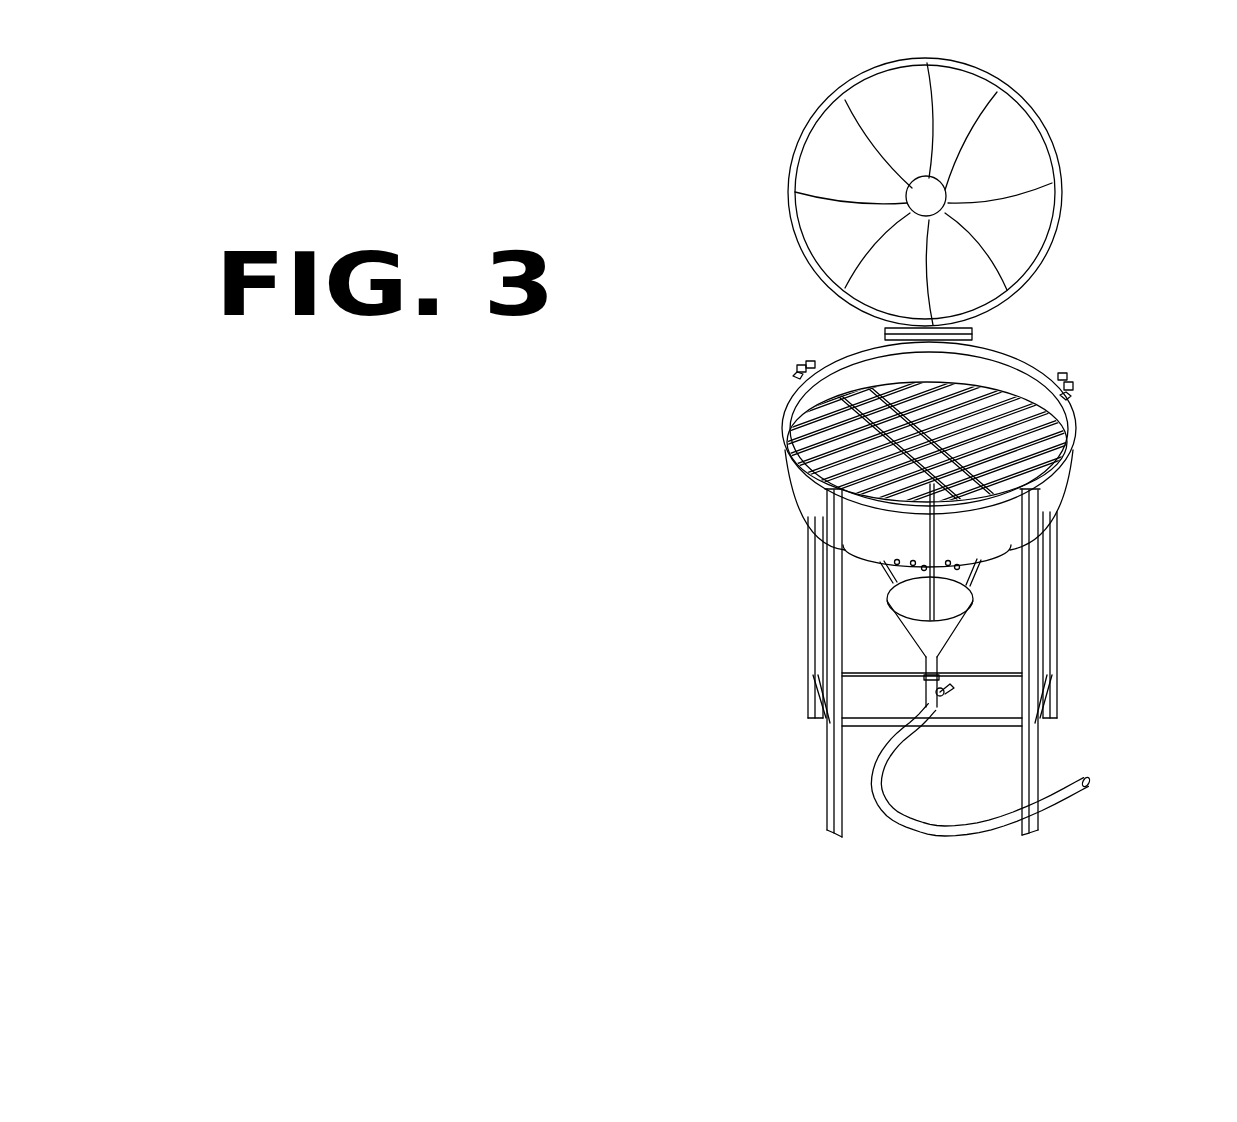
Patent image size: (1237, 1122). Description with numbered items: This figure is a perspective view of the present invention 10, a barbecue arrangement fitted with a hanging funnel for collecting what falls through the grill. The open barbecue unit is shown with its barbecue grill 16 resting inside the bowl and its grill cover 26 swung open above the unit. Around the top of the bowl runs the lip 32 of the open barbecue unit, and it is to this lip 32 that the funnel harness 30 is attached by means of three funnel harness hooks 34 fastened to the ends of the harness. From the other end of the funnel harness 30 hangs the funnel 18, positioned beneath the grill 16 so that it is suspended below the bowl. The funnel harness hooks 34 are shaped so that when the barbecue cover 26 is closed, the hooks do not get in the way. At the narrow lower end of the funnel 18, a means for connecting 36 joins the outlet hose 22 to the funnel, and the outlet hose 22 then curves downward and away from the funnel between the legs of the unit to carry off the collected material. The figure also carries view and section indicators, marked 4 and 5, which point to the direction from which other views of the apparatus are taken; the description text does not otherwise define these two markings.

The present invention 10 is at (815, 865).
The barbecue grill 16 is at (1030, 360).
The funnel 18 is at (973, 607).
The outlet hose 22 is at (1072, 797).
The grill cover 26 is at (1050, 138).
The funnel harness 30 is at (937, 542).
The lip 32 is at (782, 443).
The funnel harness hooks 34 is at (1072, 447).
The means for connecting 36 is at (950, 688).
The view direction of FIG. 4 is at (875, 624).
The section line 5- 5 is at (765, 323).